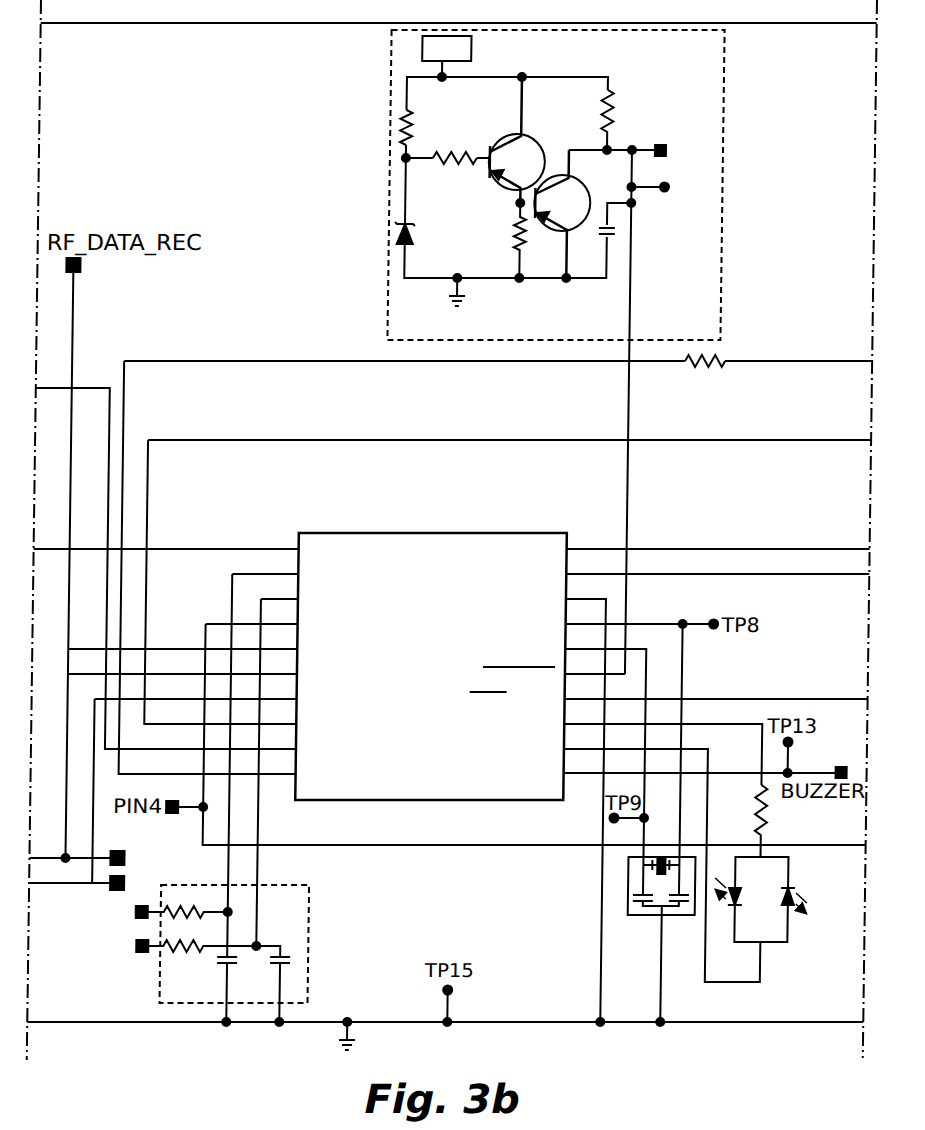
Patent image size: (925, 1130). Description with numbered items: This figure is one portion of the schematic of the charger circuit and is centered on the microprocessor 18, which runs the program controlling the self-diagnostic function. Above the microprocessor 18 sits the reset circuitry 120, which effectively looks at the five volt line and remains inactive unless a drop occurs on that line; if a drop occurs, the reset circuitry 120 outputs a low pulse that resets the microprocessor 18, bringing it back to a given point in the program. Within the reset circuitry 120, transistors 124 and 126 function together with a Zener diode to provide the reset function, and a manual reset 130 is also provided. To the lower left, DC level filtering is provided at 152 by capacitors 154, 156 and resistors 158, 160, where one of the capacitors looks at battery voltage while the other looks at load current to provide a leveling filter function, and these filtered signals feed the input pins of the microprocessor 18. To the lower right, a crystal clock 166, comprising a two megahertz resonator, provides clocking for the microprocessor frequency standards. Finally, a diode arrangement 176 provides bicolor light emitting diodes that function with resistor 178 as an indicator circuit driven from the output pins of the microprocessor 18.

The microprocessor 18 is at (460, 529).
The reset circuitry 120 is at (469, 352).
The transistor 124 is at (490, 141).
The transistor 126 is at (578, 228).
The manual reset 130 is at (663, 141).
The DC level filtering 152 is at (231, 948).
The capacitor 154 is at (303, 958).
The capacitor 156 is at (205, 977).
The resistor 158 is at (187, 893).
The resistor 160 is at (171, 967).
The crystal clock 166 is at (644, 920).
The diode arrangement 176 is at (810, 938).
The resistor 178 is at (789, 814).